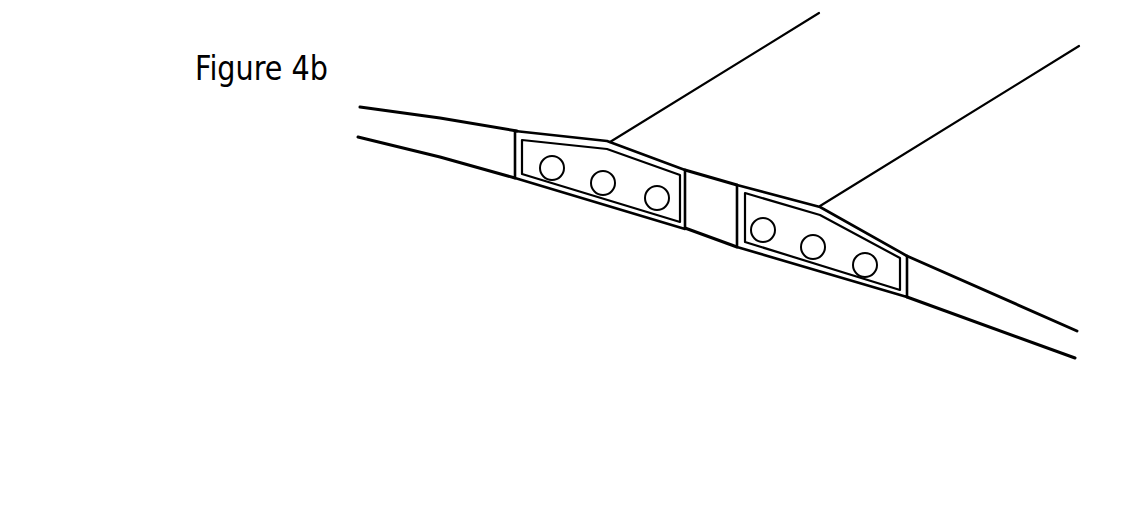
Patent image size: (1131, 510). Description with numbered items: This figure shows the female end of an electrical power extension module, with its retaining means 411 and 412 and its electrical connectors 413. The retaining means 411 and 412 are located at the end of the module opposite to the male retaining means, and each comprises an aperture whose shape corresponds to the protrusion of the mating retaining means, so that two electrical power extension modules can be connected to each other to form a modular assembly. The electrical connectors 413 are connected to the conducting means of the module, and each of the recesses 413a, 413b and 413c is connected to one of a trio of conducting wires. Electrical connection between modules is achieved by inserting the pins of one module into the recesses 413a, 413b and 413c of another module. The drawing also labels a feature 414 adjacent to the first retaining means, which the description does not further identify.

The retaining means 411 is at (908, 279).
The retaining means 412 is at (515, 170).
The electrical connectors 413 is at (832, 315).
The recess 413a is at (760, 242).
The recess 413b is at (818, 259).
The recess 413c is at (896, 314).
The recess 414 is at (680, 231).